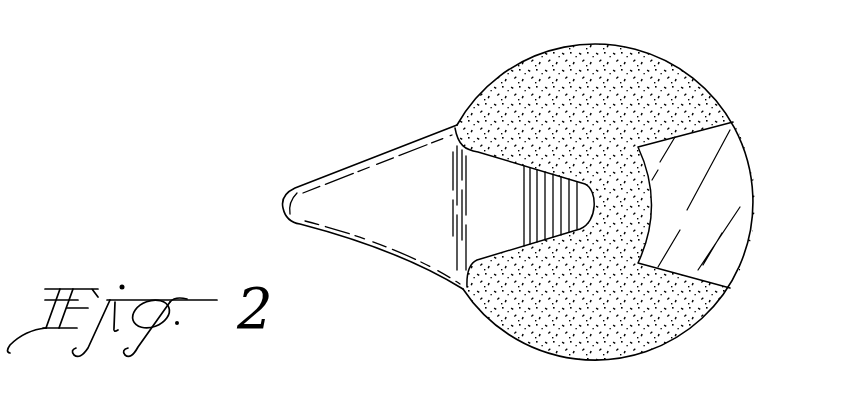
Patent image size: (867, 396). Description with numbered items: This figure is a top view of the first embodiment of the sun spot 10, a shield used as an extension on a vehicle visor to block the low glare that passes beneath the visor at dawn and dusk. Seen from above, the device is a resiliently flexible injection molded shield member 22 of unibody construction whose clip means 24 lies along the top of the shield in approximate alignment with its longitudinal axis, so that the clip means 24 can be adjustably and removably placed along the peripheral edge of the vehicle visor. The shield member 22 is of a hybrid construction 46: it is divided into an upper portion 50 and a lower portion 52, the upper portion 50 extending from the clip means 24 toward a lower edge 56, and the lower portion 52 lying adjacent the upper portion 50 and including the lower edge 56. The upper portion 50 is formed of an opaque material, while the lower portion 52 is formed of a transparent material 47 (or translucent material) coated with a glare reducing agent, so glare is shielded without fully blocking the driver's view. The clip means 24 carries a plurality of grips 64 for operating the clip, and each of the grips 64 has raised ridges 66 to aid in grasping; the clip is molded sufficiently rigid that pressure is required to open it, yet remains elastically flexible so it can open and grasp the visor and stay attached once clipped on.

The sun spot 10 is at (467, 66).
The resiliently flexible injection molded shield member 22 is at (565, 45).
The clip means 24 is at (380, 156).
The hybrid construction 46 is at (699, 96).
The transparent material 47 is at (731, 149).
The upper portion 50 is at (513, 88).
The lower portion 52 is at (675, 153).
The lower edge 56 is at (758, 197).
The grips 64 is at (498, 177).
The raised ridges 66 is at (568, 188).